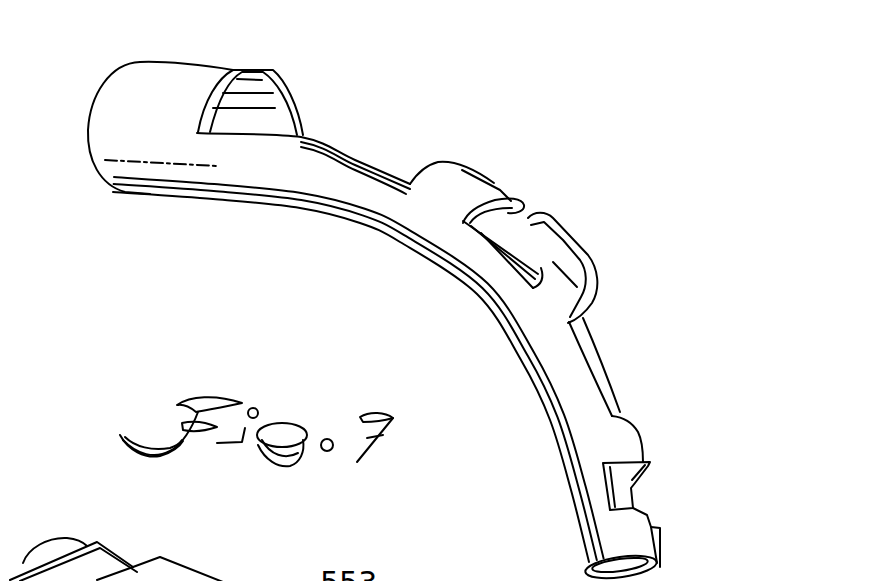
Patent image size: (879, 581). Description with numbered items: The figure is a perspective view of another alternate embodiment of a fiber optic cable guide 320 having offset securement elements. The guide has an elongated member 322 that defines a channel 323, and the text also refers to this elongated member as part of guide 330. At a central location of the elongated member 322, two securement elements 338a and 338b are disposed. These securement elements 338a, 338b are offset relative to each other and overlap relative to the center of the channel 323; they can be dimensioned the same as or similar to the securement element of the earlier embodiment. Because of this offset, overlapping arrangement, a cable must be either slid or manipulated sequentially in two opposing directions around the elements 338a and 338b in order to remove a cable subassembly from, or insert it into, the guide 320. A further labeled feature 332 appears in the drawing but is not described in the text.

The guide 320 is at (410, 119).
The elongated member 322 is at (349, 220).
The channel 323 is at (590, 384).
The guide 330 is at (627, 440).
The end cap 332 is at (147, 143).
The securement element 338a is at (493, 185).
The securement element 338b is at (598, 266).